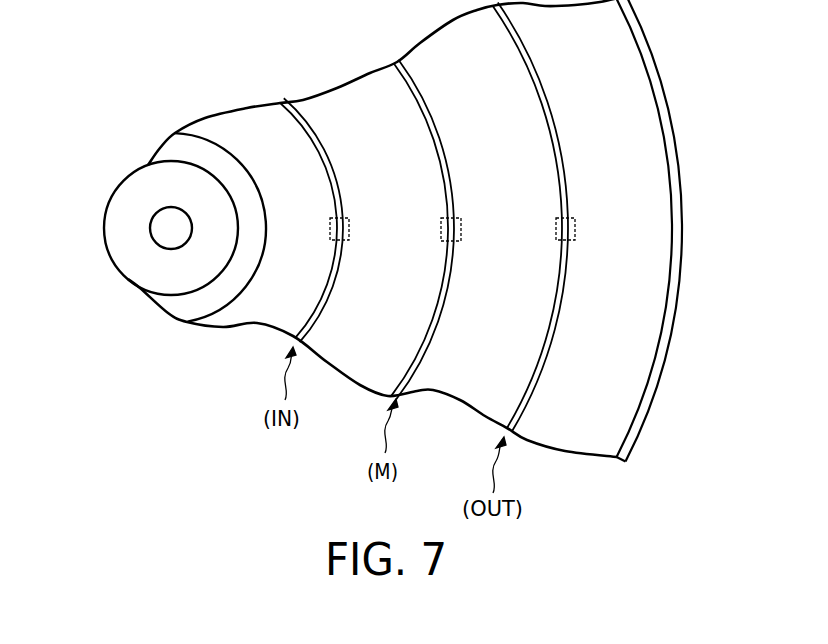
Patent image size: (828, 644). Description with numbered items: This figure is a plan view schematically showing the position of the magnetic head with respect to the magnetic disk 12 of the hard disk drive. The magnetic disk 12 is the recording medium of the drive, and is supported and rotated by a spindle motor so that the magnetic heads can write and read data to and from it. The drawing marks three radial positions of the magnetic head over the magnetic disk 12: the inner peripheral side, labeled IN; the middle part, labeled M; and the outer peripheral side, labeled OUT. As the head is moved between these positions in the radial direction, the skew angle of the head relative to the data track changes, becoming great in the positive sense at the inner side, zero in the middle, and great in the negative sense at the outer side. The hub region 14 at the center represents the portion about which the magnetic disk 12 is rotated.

The magnetic disk 12 is at (628, 62).
The hub 14 is at (126, 282).